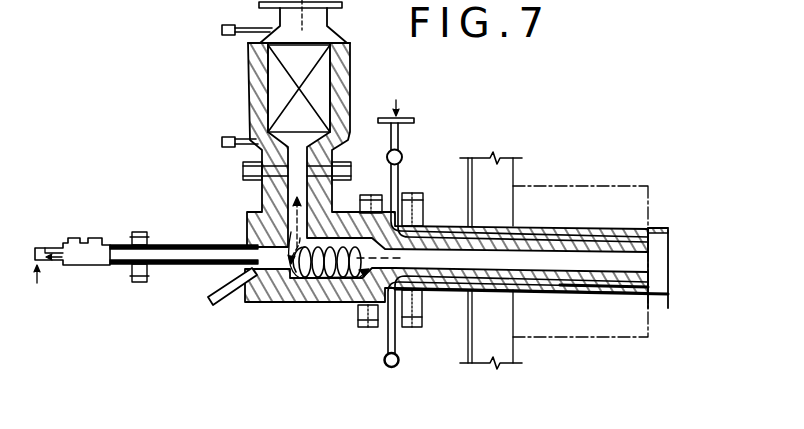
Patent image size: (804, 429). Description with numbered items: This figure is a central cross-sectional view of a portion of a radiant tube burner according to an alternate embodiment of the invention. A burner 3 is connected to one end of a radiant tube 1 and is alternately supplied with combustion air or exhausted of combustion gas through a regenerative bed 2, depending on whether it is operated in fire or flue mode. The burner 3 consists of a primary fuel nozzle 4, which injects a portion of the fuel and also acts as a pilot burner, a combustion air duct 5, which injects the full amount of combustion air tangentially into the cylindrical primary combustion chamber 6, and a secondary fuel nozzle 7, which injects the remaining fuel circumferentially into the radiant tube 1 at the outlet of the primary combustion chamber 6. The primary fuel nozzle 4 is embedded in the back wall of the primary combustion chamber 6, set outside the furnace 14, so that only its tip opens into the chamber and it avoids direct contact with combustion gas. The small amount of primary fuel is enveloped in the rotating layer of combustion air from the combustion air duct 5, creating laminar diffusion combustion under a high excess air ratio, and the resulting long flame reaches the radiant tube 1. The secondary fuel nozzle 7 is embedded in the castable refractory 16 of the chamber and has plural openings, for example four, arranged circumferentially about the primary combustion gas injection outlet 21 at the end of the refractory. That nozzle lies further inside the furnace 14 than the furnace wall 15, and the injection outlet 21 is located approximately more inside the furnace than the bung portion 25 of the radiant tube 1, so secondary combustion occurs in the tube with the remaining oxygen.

The radiant tube 1 is at (662, 229).
The regenerative bed 2 is at (318, 94).
The burner 3 is at (255, 314).
The primary fuel nozzle 4 is at (176, 247).
The combustion air duct 5 is at (262, 184).
The primary combustion chamber 6 is at (320, 278).
The secondary fuel nozzle 7 is at (565, 229).
The furnace 14 is at (629, 172).
The furnace wall 15 is at (503, 177).
The castable refractory 16 is at (588, 293).
The primary combustion gas injection outlet 21 is at (648, 264).
The bung portion 25 is at (626, 306).